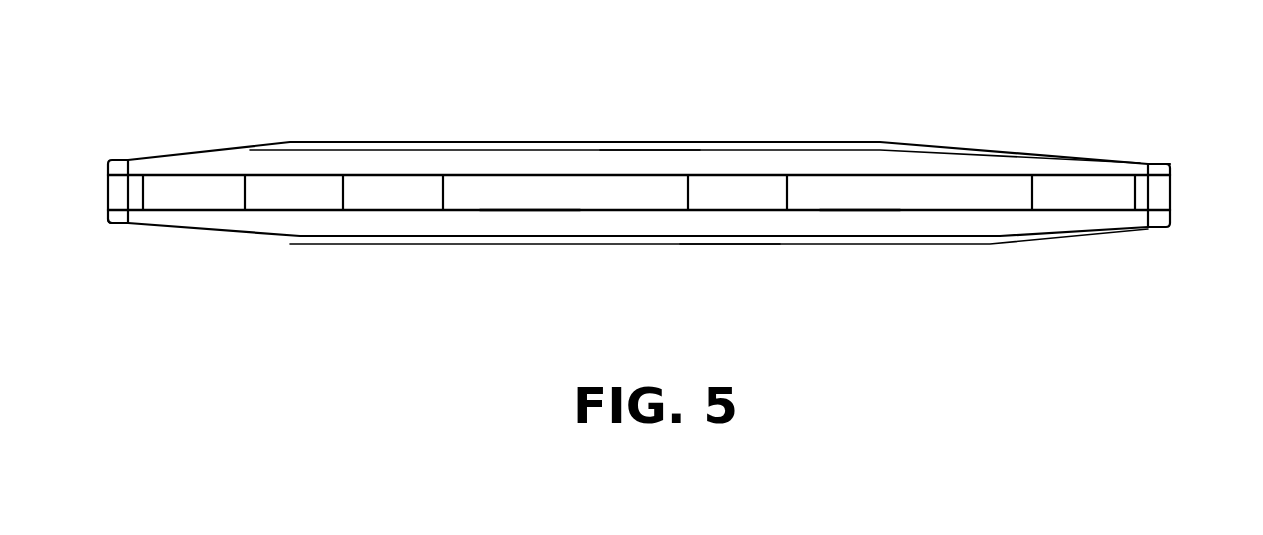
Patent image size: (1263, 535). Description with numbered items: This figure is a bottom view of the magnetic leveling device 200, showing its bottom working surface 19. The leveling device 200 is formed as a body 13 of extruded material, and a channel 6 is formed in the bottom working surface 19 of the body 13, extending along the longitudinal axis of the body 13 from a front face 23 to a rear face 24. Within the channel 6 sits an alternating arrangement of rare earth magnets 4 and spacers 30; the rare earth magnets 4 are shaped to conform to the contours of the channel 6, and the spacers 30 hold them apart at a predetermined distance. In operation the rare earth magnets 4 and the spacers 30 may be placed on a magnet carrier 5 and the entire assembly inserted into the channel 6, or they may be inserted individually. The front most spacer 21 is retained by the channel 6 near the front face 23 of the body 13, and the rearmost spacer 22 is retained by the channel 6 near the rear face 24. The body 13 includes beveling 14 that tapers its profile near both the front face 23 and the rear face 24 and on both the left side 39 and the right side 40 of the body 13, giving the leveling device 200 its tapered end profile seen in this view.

The rare earth magnet 4 is at (167, 188).
The magnet carrier 5 is at (530, 192).
The channel 6 is at (863, 211).
The body 13 is at (685, 129).
The beveling 14 is at (227, 150).
The bottom working surface 19 is at (640, 165).
The front most spacer 21 is at (1172, 197).
The rearmost spacer 22 is at (107, 193).
The front face 23 is at (1171, 172).
The rear face 24 is at (107, 222).
The spacer 30 is at (265, 195).
The left side 39 is at (815, 143).
The right side 40 is at (726, 245).
The leveling device 200 is at (949, 329).